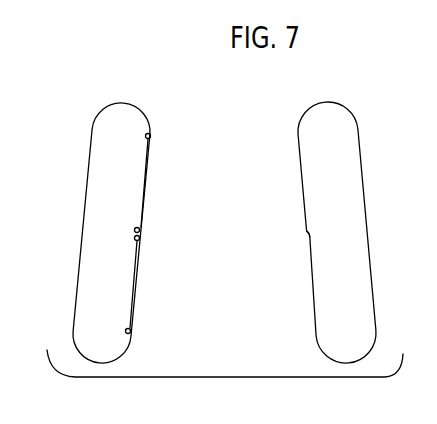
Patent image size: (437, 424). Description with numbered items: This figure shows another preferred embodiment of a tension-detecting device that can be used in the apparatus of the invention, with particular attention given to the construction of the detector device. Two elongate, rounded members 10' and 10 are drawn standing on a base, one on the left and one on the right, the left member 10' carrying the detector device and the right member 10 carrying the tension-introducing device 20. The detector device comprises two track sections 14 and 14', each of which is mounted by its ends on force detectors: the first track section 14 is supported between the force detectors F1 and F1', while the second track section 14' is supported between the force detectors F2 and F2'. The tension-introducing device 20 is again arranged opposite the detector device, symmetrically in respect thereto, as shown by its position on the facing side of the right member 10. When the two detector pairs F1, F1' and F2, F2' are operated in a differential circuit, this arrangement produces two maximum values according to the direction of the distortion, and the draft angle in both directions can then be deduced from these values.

The capsule body 10 is at (339, 207).
The capsule body (modified) 10' is at (112, 203).
The track section 14 is at (127, 183).
The track section 14' is at (113, 284).
The tension-introducing device 20 is at (312, 232).
The force detector F1 is at (128, 140).
The force detector F1' is at (116, 214).
The force detector F2 is at (116, 244).
The force detector F2' is at (109, 318).